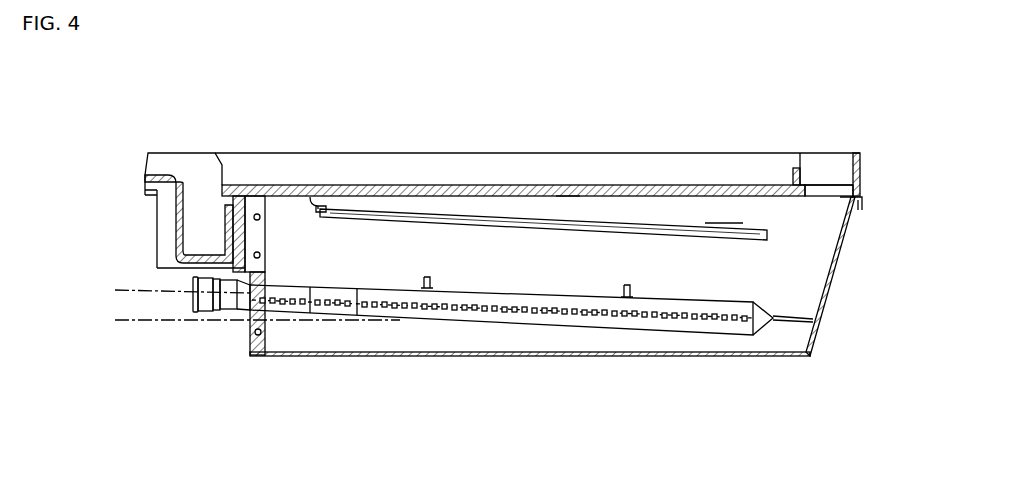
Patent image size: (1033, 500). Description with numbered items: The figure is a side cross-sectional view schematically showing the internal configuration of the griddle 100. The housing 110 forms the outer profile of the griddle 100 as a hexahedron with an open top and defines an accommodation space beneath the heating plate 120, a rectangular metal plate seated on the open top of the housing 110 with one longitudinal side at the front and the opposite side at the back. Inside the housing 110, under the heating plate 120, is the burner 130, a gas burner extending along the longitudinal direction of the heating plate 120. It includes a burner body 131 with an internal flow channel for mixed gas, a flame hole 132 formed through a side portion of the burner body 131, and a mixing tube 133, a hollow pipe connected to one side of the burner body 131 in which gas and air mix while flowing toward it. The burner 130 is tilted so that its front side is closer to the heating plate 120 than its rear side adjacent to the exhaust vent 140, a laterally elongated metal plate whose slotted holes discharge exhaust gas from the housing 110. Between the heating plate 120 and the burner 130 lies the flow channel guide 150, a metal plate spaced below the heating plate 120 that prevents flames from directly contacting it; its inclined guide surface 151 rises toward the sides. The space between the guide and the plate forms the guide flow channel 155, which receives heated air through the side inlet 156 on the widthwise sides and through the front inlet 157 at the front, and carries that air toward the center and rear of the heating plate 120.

The griddle 100 is at (876, 108).
The housing 110 is at (831, 283).
The heating plate 120 is at (408, 184).
The burner 130 is at (491, 325).
The burner body 131 is at (570, 318).
The flame hole 132 is at (638, 317).
The mixing tube 133 is at (303, 291).
The exhaust vent 140 is at (829, 177).
The flow channel guide 150 is at (634, 214).
The guide surface 151 is at (495, 221).
The guide flow channel 155 is at (724, 212).
The side inlet 156 is at (580, 209).
The front inlet 157 is at (315, 198).